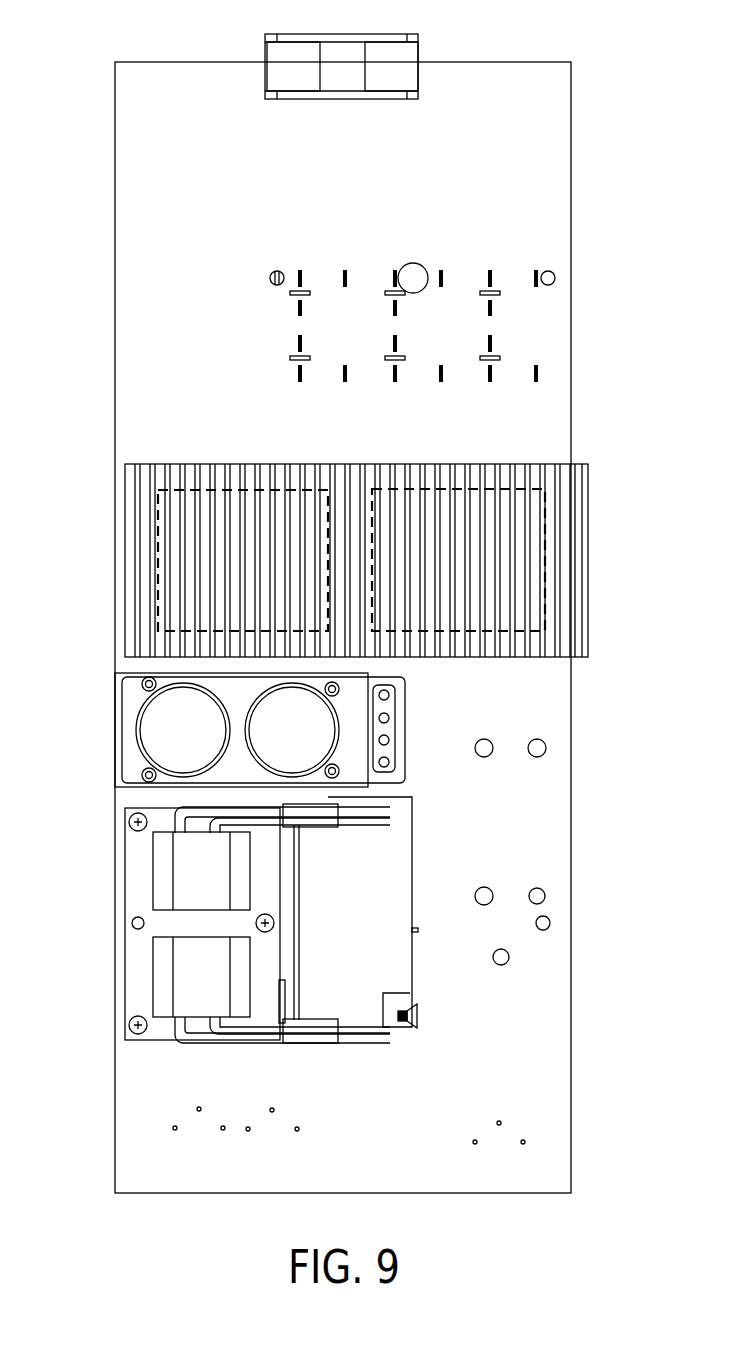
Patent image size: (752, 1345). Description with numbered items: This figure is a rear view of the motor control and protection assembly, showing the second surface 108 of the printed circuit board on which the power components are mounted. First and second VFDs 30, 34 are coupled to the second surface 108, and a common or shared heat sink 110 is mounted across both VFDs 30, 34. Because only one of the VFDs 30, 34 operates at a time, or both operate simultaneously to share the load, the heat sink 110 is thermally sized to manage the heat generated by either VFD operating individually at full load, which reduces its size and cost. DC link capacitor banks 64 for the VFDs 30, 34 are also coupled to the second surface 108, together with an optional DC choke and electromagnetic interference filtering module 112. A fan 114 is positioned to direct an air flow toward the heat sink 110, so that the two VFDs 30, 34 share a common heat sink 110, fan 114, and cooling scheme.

The second surface 108 is at (500, 164).
The fan 114 is at (343, 34).
The heat sink 110 is at (588, 494).
The first VFD 30 is at (158, 559).
The second VFD 34 is at (545, 561).
The DC link capacitor banks 64 is at (118, 740).
The DC choke and electromagnetic interference (EMI) filtering module 112 is at (118, 928).